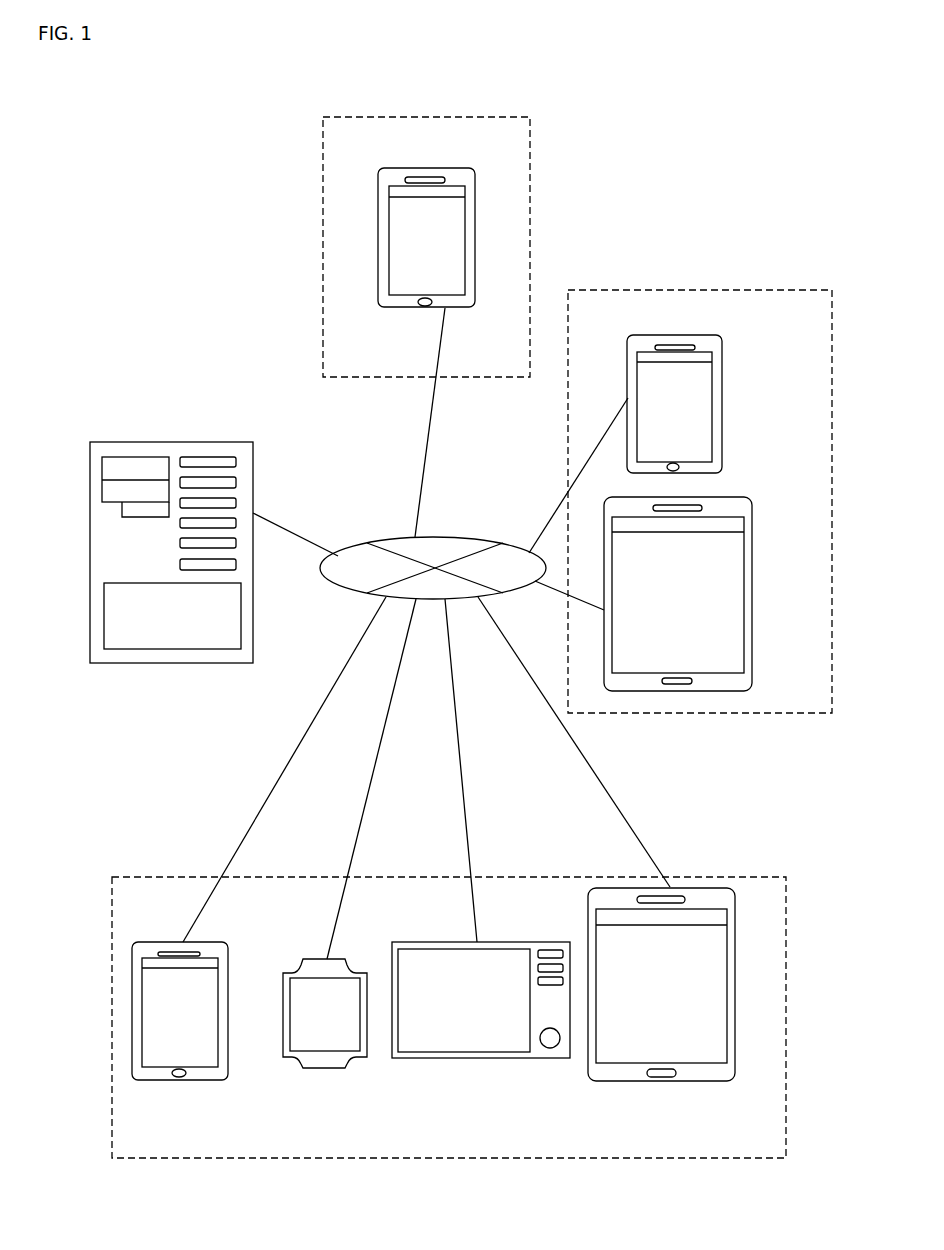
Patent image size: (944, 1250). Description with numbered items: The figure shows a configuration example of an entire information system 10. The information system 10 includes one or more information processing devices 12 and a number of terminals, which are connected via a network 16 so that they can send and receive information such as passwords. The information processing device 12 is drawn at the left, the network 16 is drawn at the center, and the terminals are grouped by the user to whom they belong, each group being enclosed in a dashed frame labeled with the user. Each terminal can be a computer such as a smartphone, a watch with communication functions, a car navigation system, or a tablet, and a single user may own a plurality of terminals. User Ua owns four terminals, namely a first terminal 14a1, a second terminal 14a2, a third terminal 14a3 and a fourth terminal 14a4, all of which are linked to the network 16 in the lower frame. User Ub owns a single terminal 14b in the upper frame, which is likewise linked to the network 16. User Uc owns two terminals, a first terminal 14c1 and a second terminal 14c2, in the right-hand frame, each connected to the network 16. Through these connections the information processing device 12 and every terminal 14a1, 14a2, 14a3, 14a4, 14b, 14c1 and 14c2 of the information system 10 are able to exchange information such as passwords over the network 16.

The information system 10 is at (723, 113).
The information processing device 12 is at (189, 442).
The network 16 is at (468, 538).
The terminal 14b is at (398, 311).
The terminal 14c1 is at (723, 387).
The terminal 14c2 is at (730, 498).
The terminal 14a1 is at (178, 1082).
The terminal 14a2 is at (327, 1069).
The terminal 14a3 is at (498, 1060).
The terminal 14a4 is at (665, 1083).